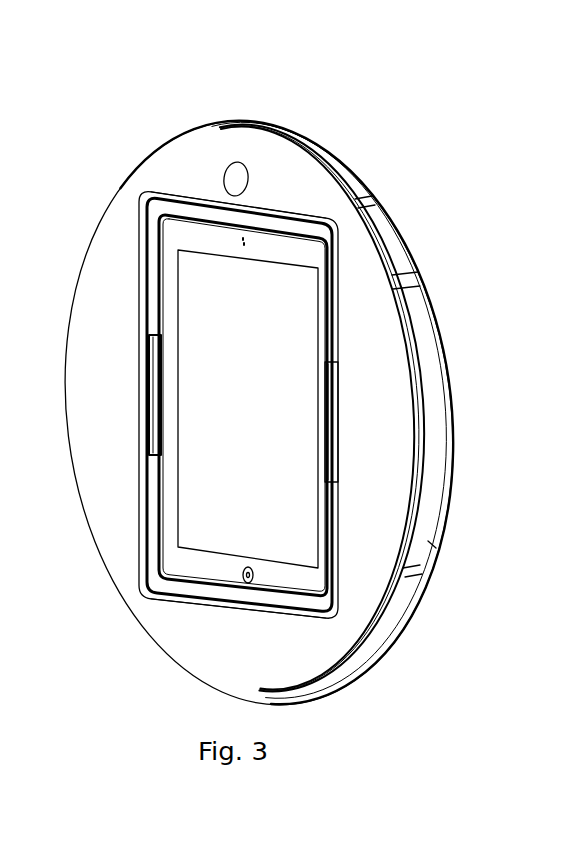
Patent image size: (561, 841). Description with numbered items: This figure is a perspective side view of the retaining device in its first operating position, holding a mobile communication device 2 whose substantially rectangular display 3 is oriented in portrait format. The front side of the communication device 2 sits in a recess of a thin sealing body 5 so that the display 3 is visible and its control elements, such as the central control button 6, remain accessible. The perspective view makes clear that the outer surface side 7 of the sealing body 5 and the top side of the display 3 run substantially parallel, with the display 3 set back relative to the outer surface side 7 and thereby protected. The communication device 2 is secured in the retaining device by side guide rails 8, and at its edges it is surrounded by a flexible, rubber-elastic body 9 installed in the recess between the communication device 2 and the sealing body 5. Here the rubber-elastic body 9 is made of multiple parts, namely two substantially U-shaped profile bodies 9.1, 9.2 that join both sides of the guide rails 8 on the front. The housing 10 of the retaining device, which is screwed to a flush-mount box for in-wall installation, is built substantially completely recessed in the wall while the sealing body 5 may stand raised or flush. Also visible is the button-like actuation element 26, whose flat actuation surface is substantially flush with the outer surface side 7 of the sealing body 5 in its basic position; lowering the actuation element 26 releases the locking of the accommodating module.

The mobile communication device 2 is at (288, 251).
The display 3 is at (231, 417).
The sealing body 5 is at (377, 318).
The central control button 6 is at (266, 578).
The outer surface side 7 is at (380, 559).
The side guide rails 8 is at (160, 352).
The rubber-elastic body 9 is at (208, 393).
The U-shaped profile body 9.1 is at (191, 210).
The U-shaped profile body 9.2 is at (190, 596).
The housing 10 is at (432, 408).
The actuation element 26 is at (242, 168).